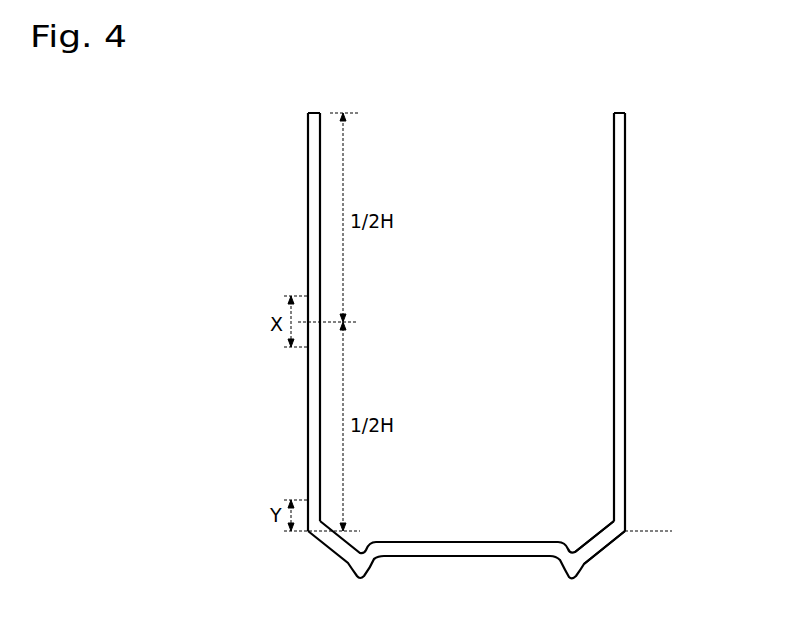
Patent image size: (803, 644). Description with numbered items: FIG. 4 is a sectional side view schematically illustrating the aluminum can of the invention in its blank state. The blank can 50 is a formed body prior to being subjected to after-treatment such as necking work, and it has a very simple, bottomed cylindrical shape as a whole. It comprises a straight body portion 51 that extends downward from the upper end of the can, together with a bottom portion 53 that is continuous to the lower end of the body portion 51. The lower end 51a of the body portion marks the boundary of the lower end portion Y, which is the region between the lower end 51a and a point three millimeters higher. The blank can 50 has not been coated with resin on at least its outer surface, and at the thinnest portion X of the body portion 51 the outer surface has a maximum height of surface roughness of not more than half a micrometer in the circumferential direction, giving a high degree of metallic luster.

The blank can 50 is at (506, 370).
The body portion 51 is at (625, 350).
The lower end of the body portion 51a is at (625, 531).
The bottom portion 53 is at (430, 557).